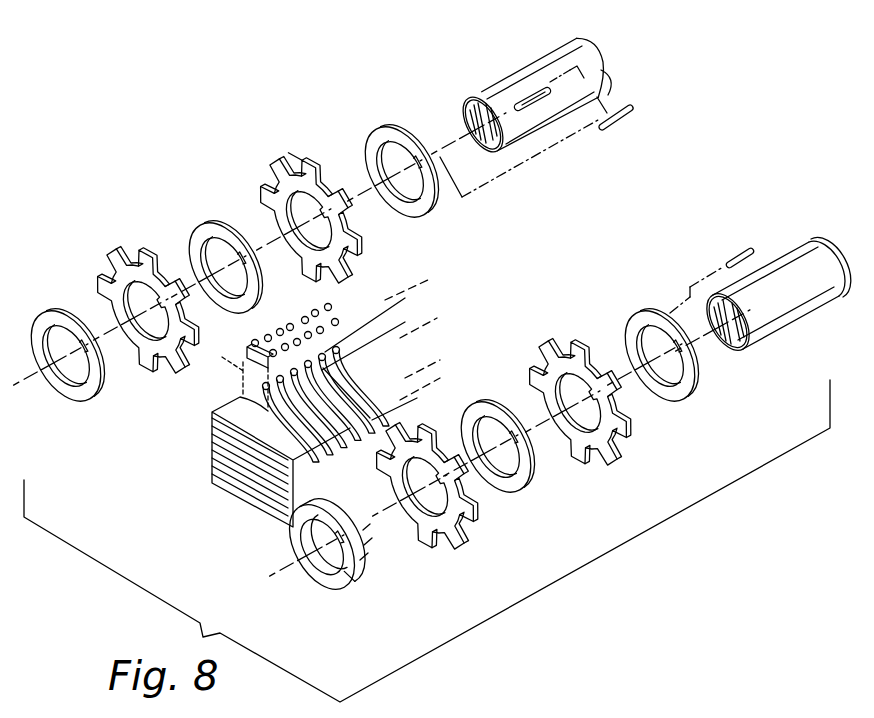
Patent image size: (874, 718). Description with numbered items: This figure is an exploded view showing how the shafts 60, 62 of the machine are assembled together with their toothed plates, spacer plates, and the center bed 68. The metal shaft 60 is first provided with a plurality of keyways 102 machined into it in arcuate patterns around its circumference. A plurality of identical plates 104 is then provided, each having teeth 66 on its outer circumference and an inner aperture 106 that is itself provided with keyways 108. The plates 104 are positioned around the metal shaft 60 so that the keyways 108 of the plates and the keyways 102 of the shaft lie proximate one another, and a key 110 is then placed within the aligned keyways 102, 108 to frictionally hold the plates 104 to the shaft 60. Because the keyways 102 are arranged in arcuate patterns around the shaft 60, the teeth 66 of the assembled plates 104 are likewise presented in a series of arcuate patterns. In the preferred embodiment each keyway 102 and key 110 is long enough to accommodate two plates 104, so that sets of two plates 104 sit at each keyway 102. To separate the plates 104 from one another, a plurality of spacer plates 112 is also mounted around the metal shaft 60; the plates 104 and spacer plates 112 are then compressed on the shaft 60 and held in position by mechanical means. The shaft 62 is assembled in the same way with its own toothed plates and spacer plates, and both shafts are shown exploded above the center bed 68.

The metal shaft 60 is at (338, 206).
The shaft 62 is at (785, 272).
The teeth 66 is at (311, 182).
The laminated stator core block 68 is at (232, 461).
The keyways 102 is at (520, 100).
The plates 104 is at (273, 157).
The inner aperture 106 is at (263, 190).
The keyways 108 is at (332, 213).
The key 110 is at (618, 124).
The spacer plates 112 is at (392, 133).